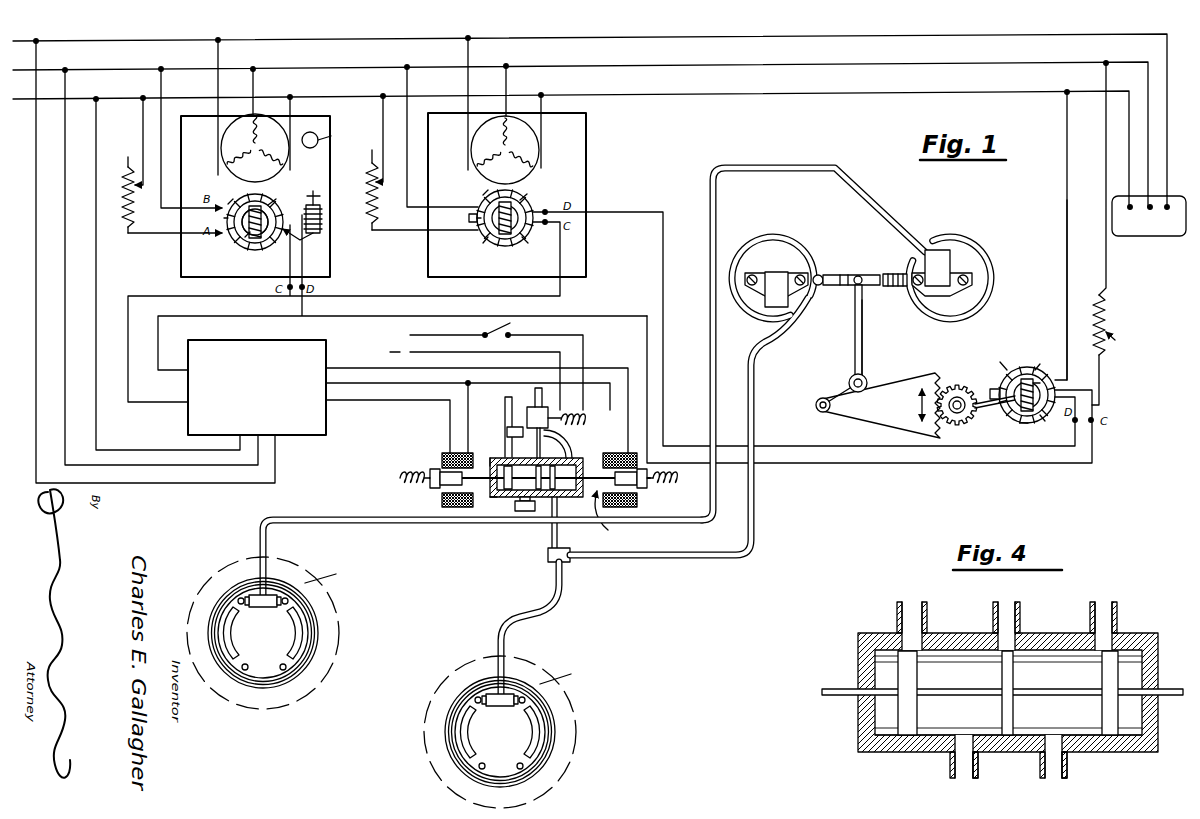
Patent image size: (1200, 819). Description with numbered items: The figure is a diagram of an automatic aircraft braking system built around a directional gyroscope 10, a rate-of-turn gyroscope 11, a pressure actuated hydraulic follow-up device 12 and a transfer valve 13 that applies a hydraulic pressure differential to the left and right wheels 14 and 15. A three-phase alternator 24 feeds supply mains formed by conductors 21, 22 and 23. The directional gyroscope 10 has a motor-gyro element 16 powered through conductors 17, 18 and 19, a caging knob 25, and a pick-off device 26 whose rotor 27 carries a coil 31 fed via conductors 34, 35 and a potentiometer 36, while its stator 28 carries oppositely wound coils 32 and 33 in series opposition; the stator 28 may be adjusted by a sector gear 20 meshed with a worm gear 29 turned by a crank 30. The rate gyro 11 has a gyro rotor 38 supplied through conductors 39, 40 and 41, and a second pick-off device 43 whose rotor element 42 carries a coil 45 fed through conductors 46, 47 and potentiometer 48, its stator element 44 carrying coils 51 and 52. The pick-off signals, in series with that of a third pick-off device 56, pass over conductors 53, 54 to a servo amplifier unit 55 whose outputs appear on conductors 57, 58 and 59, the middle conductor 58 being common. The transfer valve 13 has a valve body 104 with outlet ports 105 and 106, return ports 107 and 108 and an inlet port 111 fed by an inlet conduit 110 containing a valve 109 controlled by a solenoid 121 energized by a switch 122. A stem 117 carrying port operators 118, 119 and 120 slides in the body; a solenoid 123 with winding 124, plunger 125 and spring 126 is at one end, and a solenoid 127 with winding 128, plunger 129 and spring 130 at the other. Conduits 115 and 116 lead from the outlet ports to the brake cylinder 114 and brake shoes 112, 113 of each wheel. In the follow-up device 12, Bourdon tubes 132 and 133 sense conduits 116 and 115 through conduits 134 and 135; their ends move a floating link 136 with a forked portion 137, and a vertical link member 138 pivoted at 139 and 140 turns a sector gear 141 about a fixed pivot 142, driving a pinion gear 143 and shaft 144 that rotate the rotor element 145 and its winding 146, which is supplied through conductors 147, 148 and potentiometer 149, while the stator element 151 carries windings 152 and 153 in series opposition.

In FIG. 1, the directional gyroscope 10 is at (332, 262).
In FIG. 1, the rate-of-turn gyroscope 11 is at (588, 248).
In FIG. 1, the pressure actuated hydraulic follow-up device 12 is at (806, 237).
In FIG. 1, the transfer valve 13 is at (426, 437).
In FIG. 1, the left wheel 14 is at (577, 718).
In FIG. 1, the right wheel 15 is at (333, 657).
In FIG. 1, the motor-gyro element 16 is at (222, 140).
In FIG. 1, the conductor 17 is at (291, 108).
In FIG. 1, the conductor 18 is at (254, 83).
In FIG. 1, the conductor 19 is at (219, 57).
In FIG. 1, the sector gear 20 is at (301, 241).
In FIG. 1, the conductor 21 is at (36, 283).
In FIG. 1, the conductor 22 is at (65, 327).
In FIG. 1, the conductor 23 is at (96, 347).
In FIG. 1, the 3-phase alternator 24 is at (1156, 237).
In FIG. 1, the knob 25 is at (310, 148).
In FIG. 1, the pick-off device 26 is at (230, 206).
In FIG. 1, the rotor 27 is at (233, 234).
In FIG. 1, the stator 28 is at (209, 217).
In FIG. 1, the worm gear 29 is at (323, 220).
In FIG. 1, the crank 30 is at (321, 194).
In FIG. 1, the coil 31 is at (245, 210).
In FIG. 1, the stator coil 32 is at (269, 205).
In FIG. 1, the stator coil 33 is at (247, 236).
In FIG. 1, the conductor 34 is at (161, 209).
In FIG. 1, the conductor 35 is at (146, 234).
In FIG. 1, the potentiometer 36 is at (123, 194).
In FIG. 1, the gyro rotor 38 is at (472, 136).
In FIG. 1, the conductor 39 is at (468, 53).
In FIG. 1, the conductor 40 is at (506, 82).
In FIG. 1, the conductor 41 is at (541, 105).
In FIG. 1, the rotor element 42 is at (469, 219).
In FIG. 1, the second pick-off device 43 is at (479, 194).
In FIG. 1, the stator element 44 is at (523, 200).
In FIG. 1, the coil 45 is at (524, 238).
In FIG. 1, the conductor 46 is at (408, 153).
In FIG. 1, the conductor 47 is at (385, 230).
In FIG. 1, the potentiometer 48 is at (385, 163).
In FIG. 1, the stator coil 51 is at (478, 207).
In FIG. 1, the stator coil 52 is at (487, 238).
In FIG. 1, the conductor 53 is at (160, 296).
In FIG. 1, the conductor 54 is at (200, 316).
In FIG. 1, the servo amplifier unit 55 is at (272, 340).
In FIG. 1, the third pick-off device 56 is at (1002, 359).
In FIG. 1, the conductor 57 is at (346, 367).
In FIG. 1, the conductor 58 is at (396, 383).
In FIG. 1, the conductor 59 is at (383, 401).
In FIG. 1, the valve body 104 is at (494, 459).
In FIG. 4, the valve body 104 is at (893, 754).
In FIG. 1, the high-pressure outlet port 105 is at (522, 511).
In FIG. 4, the high-pressure outlet port 105 is at (951, 754).
In FIG. 1, the high-pressure outlet port 106 is at (558, 508).
In FIG. 4, the high-pressure outlet port 106 is at (1068, 754).
In FIG. 1, the return port 107 is at (573, 446).
In FIG. 4, the return port 107 is at (1118, 633).
In FIG. 1, the return port 108 is at (507, 432).
In FIG. 4, the return port 108 is at (898, 632).
In FIG. 1, the valve 109 is at (543, 413).
In FIG. 1, the high-pressure inlet conduit 110 is at (534, 400).
In FIG. 1, the high fluid pressure inlet port 111 is at (537, 451).
In FIG. 4, the high fluid pressure inlet port 111 is at (991, 630).
In FIG. 1, the brake shoe 112 is at (297, 639).
In FIG. 1, the brake shoe 113 is at (234, 647).
In FIG. 1, the hydraulic brake cylinder 114 is at (263, 607).
In FIG. 1, the conduit 115 is at (356, 517).
In FIG. 4, the conduit 115 is at (979, 758).
In FIG. 1, the conduit 116 is at (561, 589).
In FIG. 4, the conduit 116 is at (1068, 773).
In FIG. 1, the stem 117 is at (500, 498).
In FIG. 4, the stem 117 is at (850, 697).
In FIG. 1, the valve port operator 118 is at (520, 476).
In FIG. 4, the valve port operator 118 is at (905, 672).
In FIG. 1, the valve port operator 119 is at (535, 479).
In FIG. 4, the valve port operator 119 is at (1013, 680).
In FIG. 1, the valve port operator 120 is at (551, 476).
In FIG. 4, the valve port operator 120 is at (1102, 700).
In FIG. 1, the solenoid 121 is at (586, 411).
In FIG. 1, the switch 122 is at (484, 334).
In FIG. 1, the solenoid 123 is at (441, 461).
In FIG. 1, the coil winding 124 is at (442, 500).
In FIG. 1, the plunger 125 is at (438, 486).
In FIG. 1, the spring 126 is at (398, 478).
In FIG. 1, the solenoid 127 is at (622, 517).
In FIG. 1, the coil winding 128 is at (638, 501).
In FIG. 1, the plunger 129 is at (677, 482).
In FIG. 1, the spring 130 is at (664, 462).
In FIG. 1, the Bourdon tube 132 is at (757, 237).
In FIG. 1, the Bourdon tube 133 is at (958, 241).
In FIG. 1, the conduit 134 is at (728, 558).
In FIG. 1, the conduit 135 is at (760, 166).
In FIG. 1, the floating link 136 is at (876, 275).
In FIG. 1, the forked portion 137 is at (897, 274).
In FIG. 1, the vertical link member 138 is at (863, 335).
In FIG. 1, the pivot 139 is at (856, 290).
In FIG. 1, the pivot 140 is at (852, 380).
In FIG. 1, the sector gear 141 is at (881, 395).
In FIG. 1, the fixed pivot 142 is at (816, 406).
In FIG. 1, the pinion gear 143 is at (958, 385).
In FIG. 1, the shaft 144 is at (986, 405).
In FIG. 1, the rotor element 145 is at (1041, 416).
In FIG. 1, the winding 146 is at (1025, 370).
In FIG. 1, the conductor 147 is at (1066, 231).
In FIG. 1, the conductor 148 is at (1108, 291).
In FIG. 1, the potentiometer 149 is at (1130, 345).
In FIG. 1, the stator element 151 is at (1031, 366).
In FIG. 1, the stator winding 152 is at (1036, 381).
In FIG. 1, the stator winding 153 is at (1022, 425).